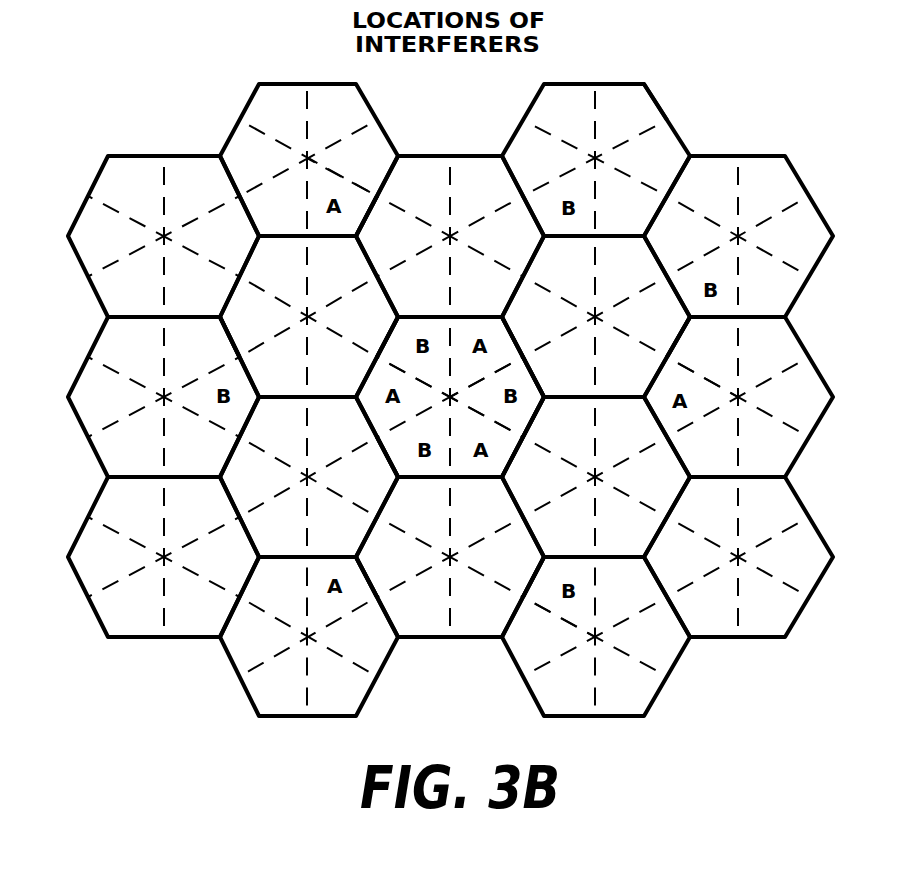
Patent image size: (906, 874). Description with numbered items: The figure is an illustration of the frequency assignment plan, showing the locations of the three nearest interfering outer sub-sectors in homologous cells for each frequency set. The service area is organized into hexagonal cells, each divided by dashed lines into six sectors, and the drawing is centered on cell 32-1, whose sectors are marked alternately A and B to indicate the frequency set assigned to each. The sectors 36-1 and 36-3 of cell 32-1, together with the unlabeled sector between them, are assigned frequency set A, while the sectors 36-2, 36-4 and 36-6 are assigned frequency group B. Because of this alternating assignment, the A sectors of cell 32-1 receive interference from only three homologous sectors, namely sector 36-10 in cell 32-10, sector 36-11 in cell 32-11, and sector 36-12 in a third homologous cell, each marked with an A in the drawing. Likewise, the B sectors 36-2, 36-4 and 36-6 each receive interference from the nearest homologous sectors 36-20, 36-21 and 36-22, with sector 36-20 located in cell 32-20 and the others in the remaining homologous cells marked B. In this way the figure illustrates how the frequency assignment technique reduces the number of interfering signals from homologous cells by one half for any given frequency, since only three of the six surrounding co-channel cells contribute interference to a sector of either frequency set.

The cell 32-1 is at (535, 416).
The cell 32-10 is at (357, 97).
The cell 32-11 is at (804, 340).
The cell 32-20 is at (618, 202).
The sector 36-1 is at (509, 349).
The sector 36-2 is at (531, 395).
The sector 36-3 is at (472, 478).
The sector 36-4 is at (421, 478).
The sector 36-6 is at (420, 322).
The interfering homologous sector 36-10 is at (362, 212).
The interfering homologous sector 36-11 is at (687, 380).
The interfering homologous sector 36-12 is at (343, 602).
The nearest homologous sector 36-20 is at (675, 136).
The nearest homologous sector 36-21 is at (587, 603).
The nearest homologous sector 36-22 is at (239, 382).